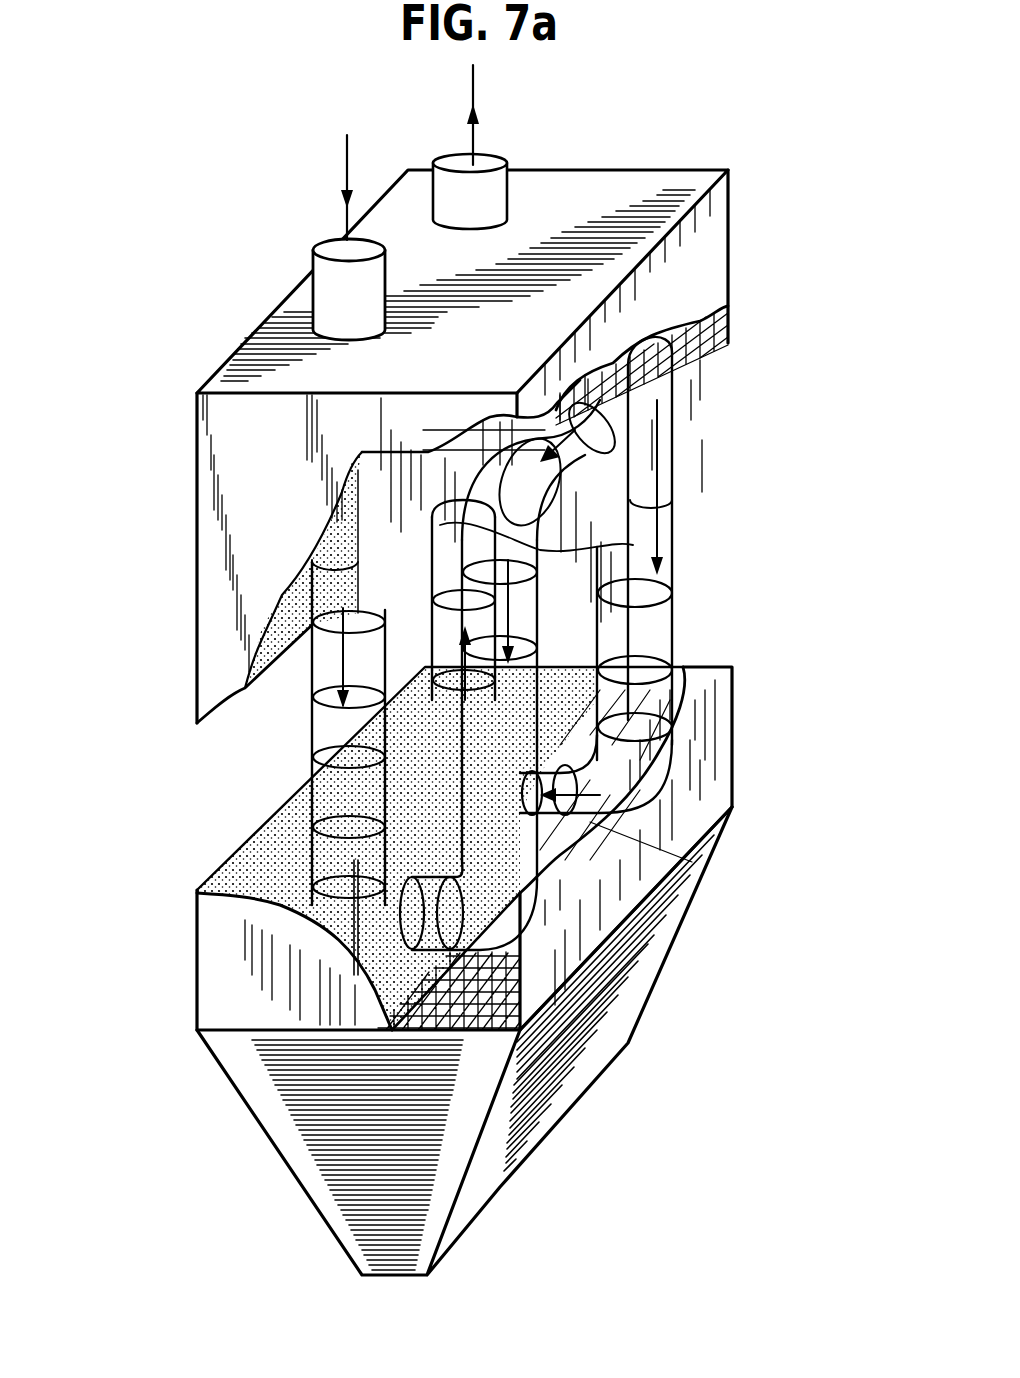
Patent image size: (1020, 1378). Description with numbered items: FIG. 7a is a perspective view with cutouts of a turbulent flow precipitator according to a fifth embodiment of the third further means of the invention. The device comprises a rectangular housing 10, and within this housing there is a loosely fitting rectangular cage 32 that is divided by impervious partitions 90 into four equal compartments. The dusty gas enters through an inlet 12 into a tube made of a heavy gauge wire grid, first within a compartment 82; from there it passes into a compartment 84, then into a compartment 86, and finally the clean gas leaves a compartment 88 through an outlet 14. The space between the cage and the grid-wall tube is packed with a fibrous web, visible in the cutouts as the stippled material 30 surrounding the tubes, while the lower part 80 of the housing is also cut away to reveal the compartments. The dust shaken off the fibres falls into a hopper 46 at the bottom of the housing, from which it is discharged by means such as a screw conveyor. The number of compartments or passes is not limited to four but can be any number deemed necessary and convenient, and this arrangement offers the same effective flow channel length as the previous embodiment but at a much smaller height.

The rectangular housing 10 is at (731, 252).
The inlet 12 is at (332, 242).
The outlet 14 is at (455, 162).
The particulate bed 30 is at (262, 877).
The rectangular cage 32 is at (731, 325).
The hopper 46 is at (600, 1045).
The lower housing section 80 is at (745, 756).
The compartment 82 is at (322, 735).
The compartment 84 is at (590, 843).
The compartment 86 is at (610, 712).
The compartment 88 is at (437, 625).
The impervious partitions 90 is at (605, 470).